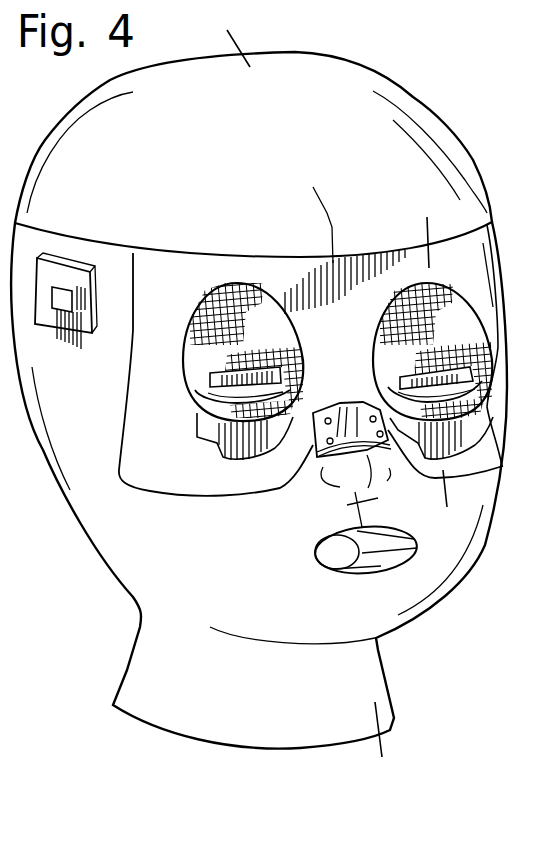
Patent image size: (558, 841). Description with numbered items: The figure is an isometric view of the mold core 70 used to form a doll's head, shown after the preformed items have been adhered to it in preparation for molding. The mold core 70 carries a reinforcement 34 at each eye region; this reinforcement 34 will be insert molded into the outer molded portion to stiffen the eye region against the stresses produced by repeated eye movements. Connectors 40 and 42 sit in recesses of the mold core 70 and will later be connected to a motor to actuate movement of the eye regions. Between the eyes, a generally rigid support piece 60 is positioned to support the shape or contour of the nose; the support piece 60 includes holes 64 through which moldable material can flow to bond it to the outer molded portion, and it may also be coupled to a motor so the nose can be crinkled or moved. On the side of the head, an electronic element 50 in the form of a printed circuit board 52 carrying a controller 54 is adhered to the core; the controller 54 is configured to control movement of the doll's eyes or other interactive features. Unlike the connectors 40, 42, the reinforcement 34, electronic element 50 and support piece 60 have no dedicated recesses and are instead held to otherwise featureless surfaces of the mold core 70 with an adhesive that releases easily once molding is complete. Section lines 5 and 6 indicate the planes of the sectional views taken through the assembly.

The mold core 70 is at (396, 60).
The section line 6- 6 is at (220, 38).
The section line 5- 5 is at (420, 230).
The electronic element 50 is at (58, 254).
The controller 54 is at (78, 288).
The printed circuit board 52 is at (54, 323).
The reinforcement 34 is at (193, 357).
The connector 42 is at (213, 380).
The connector 40 is at (230, 437).
The support piece 60 is at (347, 407).
The holes 64 is at (328, 443).